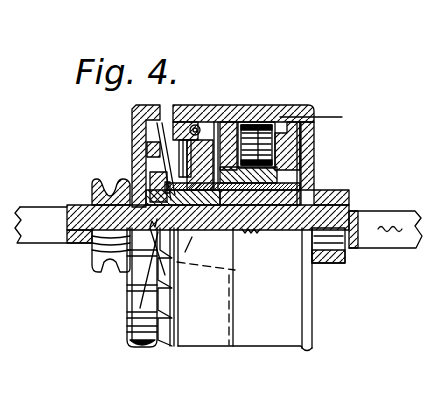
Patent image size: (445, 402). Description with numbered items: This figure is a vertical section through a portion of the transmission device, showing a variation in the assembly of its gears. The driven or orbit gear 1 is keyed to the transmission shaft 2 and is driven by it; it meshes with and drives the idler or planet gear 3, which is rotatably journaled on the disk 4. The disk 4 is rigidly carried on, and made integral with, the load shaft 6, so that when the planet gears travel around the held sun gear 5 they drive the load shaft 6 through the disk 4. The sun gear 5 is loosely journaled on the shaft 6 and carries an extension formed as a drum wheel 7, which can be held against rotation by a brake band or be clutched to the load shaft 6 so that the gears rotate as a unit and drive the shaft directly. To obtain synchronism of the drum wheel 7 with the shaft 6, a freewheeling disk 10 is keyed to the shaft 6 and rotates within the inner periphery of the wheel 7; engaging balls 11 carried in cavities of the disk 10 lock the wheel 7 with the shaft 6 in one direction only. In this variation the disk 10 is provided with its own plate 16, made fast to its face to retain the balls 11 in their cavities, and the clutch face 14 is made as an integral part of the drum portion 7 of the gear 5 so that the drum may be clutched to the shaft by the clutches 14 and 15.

The drive gear 1 is at (280, 132).
The transmission shaft 2 is at (380, 240).
The idler gear 3 is at (259, 127).
The disk 4 is at (292, 165).
The sun gear 5 is at (232, 104).
The load shaft 6 is at (67, 225).
The drum wheel 7 is at (200, 337).
The freewheeling disk 10 is at (182, 150).
The engaging balls 11 is at (196, 126).
The clutch face 14 is at (164, 343).
The clutch 15 is at (150, 291).
The plate 16 is at (175, 135).